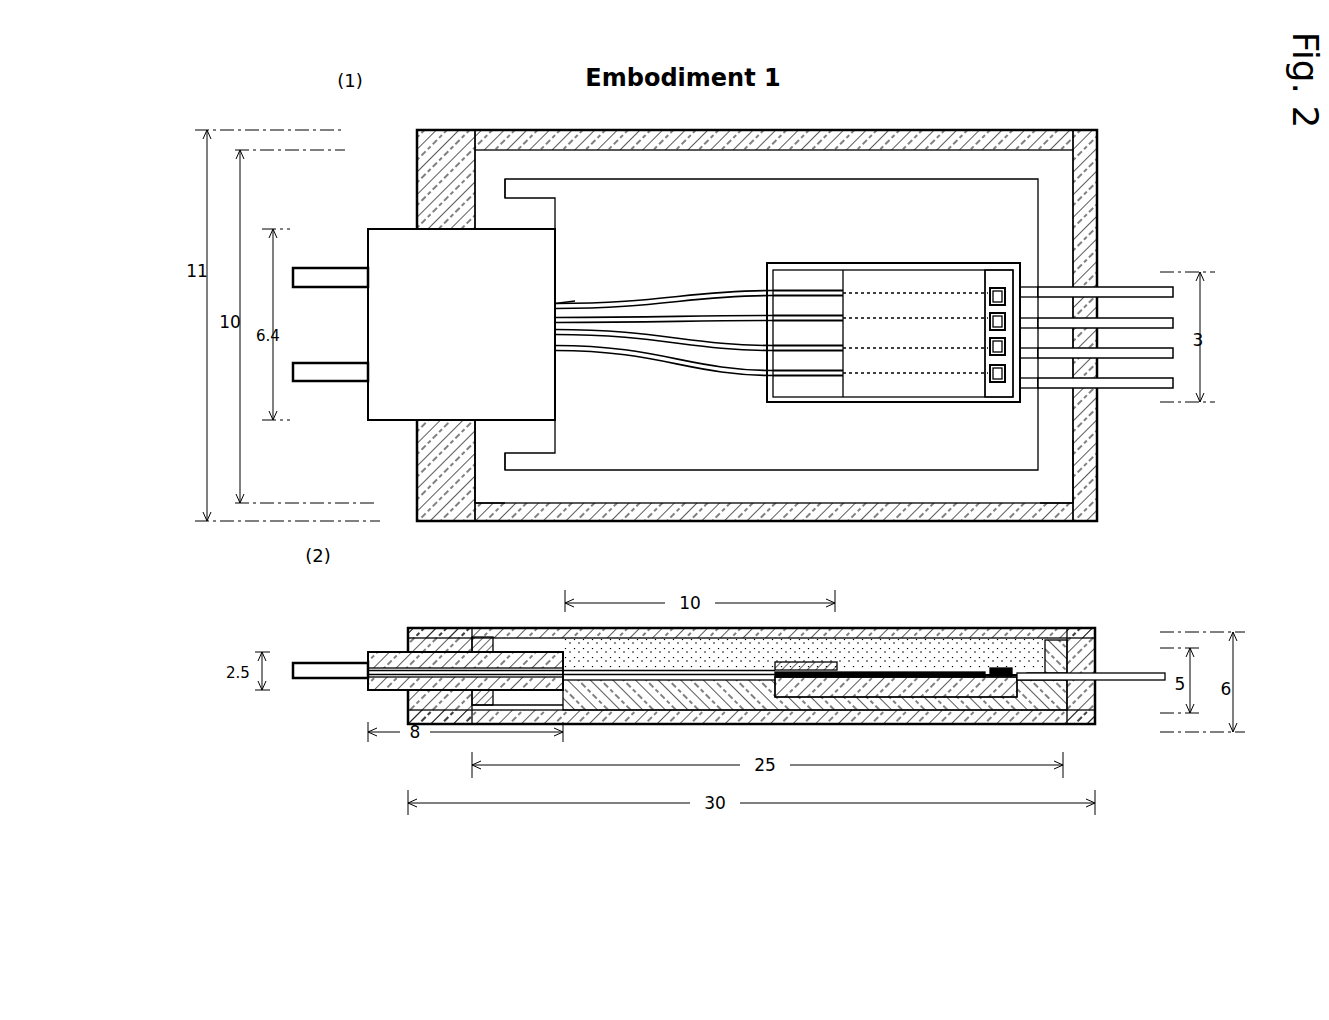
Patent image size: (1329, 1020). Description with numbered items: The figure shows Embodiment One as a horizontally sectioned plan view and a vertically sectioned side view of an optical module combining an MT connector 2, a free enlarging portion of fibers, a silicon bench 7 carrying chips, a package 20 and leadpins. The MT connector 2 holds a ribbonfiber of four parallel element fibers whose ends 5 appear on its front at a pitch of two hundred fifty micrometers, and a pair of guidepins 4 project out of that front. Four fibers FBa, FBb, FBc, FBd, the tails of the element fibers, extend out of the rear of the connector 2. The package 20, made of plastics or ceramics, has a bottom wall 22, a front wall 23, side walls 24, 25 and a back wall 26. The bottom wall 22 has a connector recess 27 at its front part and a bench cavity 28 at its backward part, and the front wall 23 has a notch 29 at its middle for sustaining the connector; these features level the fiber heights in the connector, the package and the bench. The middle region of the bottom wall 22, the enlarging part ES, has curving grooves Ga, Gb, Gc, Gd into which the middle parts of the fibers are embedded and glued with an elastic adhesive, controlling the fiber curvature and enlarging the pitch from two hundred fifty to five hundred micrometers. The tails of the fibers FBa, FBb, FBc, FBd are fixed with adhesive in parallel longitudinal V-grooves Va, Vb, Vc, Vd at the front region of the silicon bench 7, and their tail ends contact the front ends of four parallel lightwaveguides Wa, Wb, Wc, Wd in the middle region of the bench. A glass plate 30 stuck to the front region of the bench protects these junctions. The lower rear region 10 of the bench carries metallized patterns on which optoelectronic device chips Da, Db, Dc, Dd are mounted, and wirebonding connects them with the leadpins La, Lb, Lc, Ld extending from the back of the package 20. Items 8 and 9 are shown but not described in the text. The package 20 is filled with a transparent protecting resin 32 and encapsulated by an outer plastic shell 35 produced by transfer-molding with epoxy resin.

The MT connector 2 is at (403, 228).
The guidepins 4 is at (338, 273).
The fiber ends 5 is at (367, 319).
The silicon bench 7 is at (922, 263).
The fiber end face 8 is at (822, 393).
The chip mounting edge 9 is at (871, 400).
The lower rear region 10 is at (999, 397).
The package 20 is at (1022, 202).
The bottom wall 22 is at (638, 217).
The front wall 23 is at (483, 177).
The side wall 24 is at (505, 157).
The side wall 25 is at (565, 497).
The back wall 26 is at (1078, 458).
The connector recess 27 is at (474, 504).
The bench cavity 28 is at (872, 263).
The connector notch 29 is at (457, 458).
The glass plate 30 is at (800, 662).
The transparent protecting resin 32 is at (905, 650).
The outer plastic shell 35 is at (433, 157).
The curving groove Ga is at (675, 296).
The curving groove Gb is at (713, 307).
The curving groove Gc is at (586, 345).
The curving groove Gd is at (616, 350).
The fiber FBa is at (740, 300).
The fiber FBb is at (760, 318).
The fiber FBc is at (648, 352).
The fiber FBd is at (708, 370).
The V-groove Va is at (813, 290).
The V-groove Vb is at (843, 307).
The V-groove Vc is at (778, 350).
The V-groove Vd is at (800, 372).
The lightwaveguide Wa is at (948, 290).
The lightwaveguide Wb is at (975, 316).
The lightwaveguide Wc is at (898, 395).
The lightwaveguide Wd is at (946, 392).
The optoelectronic device chip Da is at (1003, 295).
The optoelectronic device chip Db is at (1002, 320).
The optoelectronic device chip Dc is at (1003, 347).
The optoelectronic device chip Dd is at (1003, 378).
The leadpin La is at (1113, 287).
The leadpin Lb is at (1148, 318).
The leadpin Lc is at (1130, 353).
The leadpin Ld is at (1167, 383).
The enlarging part ES is at (594, 276).